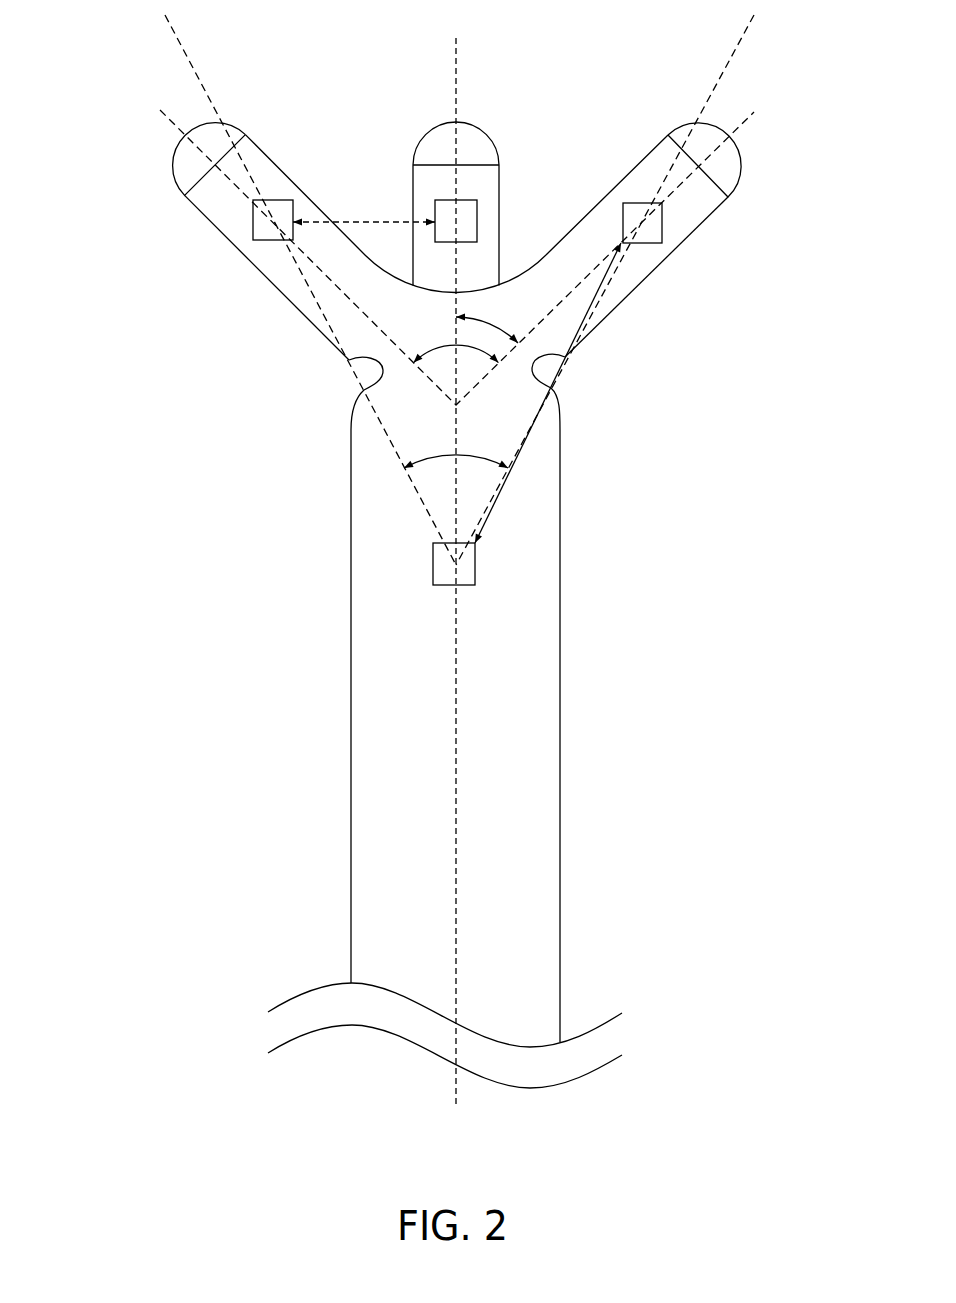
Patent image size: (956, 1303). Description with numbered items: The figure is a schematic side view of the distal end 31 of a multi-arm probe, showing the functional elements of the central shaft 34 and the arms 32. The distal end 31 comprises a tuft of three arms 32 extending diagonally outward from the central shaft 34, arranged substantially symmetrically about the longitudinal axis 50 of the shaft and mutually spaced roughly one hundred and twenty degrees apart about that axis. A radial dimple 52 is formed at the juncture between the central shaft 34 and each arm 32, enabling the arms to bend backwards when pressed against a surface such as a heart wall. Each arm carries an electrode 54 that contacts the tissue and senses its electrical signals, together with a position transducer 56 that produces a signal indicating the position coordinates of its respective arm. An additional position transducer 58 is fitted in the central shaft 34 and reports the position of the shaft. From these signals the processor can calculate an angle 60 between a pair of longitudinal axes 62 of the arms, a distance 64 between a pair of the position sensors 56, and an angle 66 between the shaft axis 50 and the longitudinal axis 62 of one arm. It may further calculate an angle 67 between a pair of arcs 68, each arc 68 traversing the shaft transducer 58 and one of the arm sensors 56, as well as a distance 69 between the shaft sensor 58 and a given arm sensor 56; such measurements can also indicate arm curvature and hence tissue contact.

The distal end 31 is at (212, 492).
The arms 32 is at (285, 291).
The central shaft 34 is at (350, 617).
The longitudinal axis 50 is at (463, 50).
The radial dimple 52 is at (352, 366).
The electrode 54 is at (226, 123).
The position transducer 56 is at (253, 226).
The position transducer 58 is at (476, 564).
The angle 60 is at (440, 347).
The longitudinal axis 62 is at (170, 118).
The distance 64 is at (362, 222).
The angle 66 is at (493, 330).
The angle 67 is at (446, 454).
The arc 68 is at (180, 43).
The distance 69 is at (526, 450).